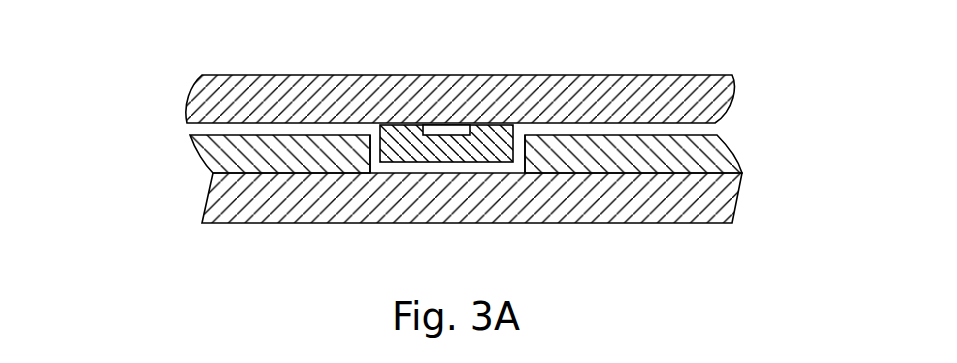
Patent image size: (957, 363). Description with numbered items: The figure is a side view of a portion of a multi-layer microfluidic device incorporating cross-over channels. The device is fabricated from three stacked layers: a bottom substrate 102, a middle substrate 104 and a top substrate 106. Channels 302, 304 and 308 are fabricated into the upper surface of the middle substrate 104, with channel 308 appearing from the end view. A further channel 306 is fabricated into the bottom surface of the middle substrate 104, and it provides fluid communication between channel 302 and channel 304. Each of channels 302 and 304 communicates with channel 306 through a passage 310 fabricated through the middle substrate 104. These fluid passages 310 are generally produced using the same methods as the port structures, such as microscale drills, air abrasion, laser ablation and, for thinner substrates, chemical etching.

The bottom substrate 102 is at (737, 197).
The middle substrate 104 is at (737, 153).
The top substrate 106 is at (732, 100).
The channel 302 is at (713, 128).
The channel 304 is at (187, 132).
The channel 306 is at (447, 162).
The channel 308 is at (448, 127).
The passage 310 is at (375, 148).